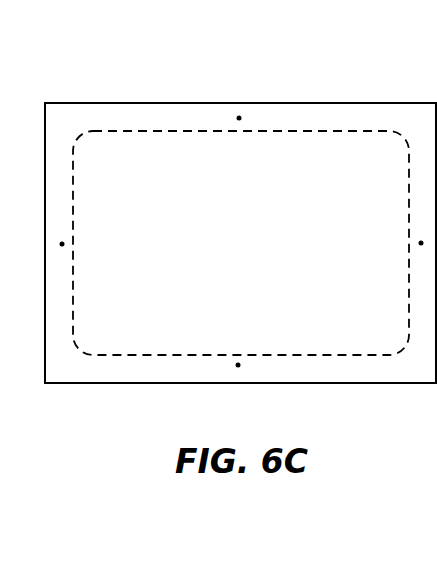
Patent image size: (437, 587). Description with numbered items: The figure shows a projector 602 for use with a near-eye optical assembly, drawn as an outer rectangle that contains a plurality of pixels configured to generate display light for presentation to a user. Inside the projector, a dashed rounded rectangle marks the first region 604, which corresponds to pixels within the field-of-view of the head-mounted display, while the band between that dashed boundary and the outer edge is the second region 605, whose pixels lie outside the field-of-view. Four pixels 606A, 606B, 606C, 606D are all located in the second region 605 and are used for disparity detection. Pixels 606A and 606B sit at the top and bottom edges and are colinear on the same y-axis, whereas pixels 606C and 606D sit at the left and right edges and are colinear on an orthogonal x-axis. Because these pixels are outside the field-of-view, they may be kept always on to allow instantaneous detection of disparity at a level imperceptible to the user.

The projector 602 is at (298, 103).
The first region 604 is at (262, 267).
The second region 605 is at (428, 377).
The pixel 606A is at (239, 118).
The pixel 606B is at (238, 365).
The pixel 606C is at (62, 244).
The pixel 606D is at (421, 243).